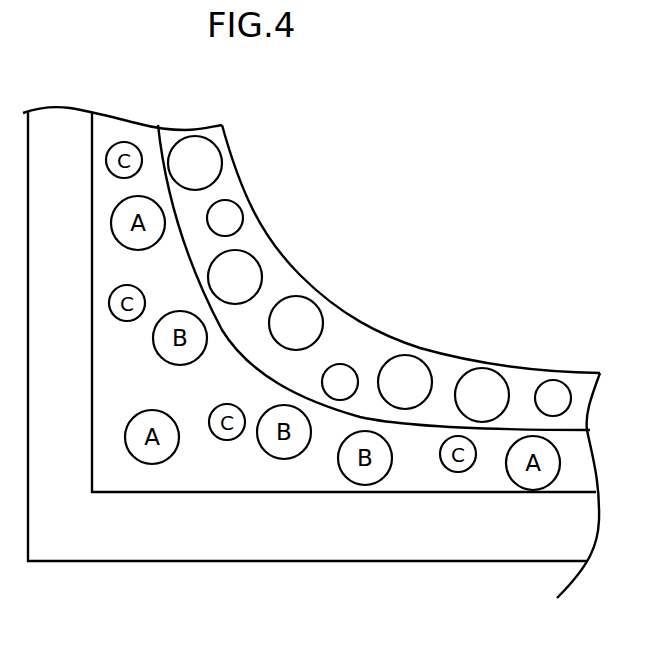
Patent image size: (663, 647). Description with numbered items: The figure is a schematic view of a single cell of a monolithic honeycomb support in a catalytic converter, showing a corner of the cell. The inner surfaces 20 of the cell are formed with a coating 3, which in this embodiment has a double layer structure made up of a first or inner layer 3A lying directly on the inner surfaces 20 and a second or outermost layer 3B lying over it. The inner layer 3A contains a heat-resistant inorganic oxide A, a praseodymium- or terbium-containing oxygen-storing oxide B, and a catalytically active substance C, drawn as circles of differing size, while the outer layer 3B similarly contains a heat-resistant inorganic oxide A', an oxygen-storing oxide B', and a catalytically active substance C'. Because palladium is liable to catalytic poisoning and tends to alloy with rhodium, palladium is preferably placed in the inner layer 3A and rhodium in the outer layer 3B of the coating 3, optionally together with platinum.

The coating 3 is at (387, 180).
The inner layer 3A is at (285, 383).
The outer layer 3B is at (270, 242).
The inner surfaces 20 is at (177, 492).